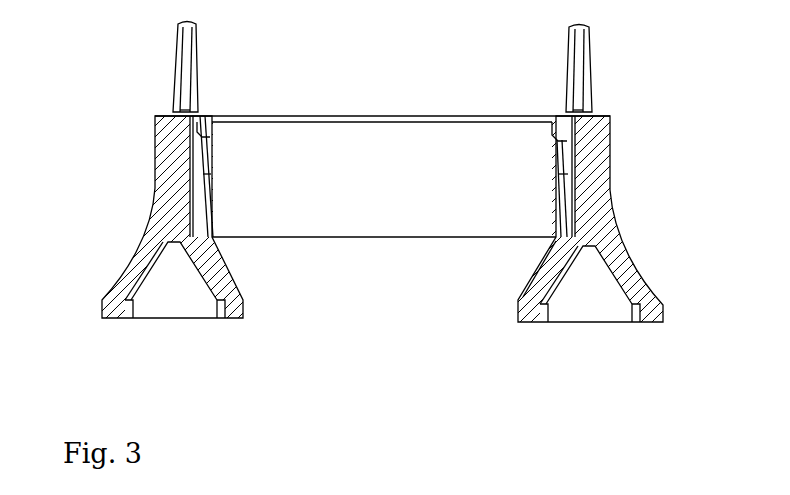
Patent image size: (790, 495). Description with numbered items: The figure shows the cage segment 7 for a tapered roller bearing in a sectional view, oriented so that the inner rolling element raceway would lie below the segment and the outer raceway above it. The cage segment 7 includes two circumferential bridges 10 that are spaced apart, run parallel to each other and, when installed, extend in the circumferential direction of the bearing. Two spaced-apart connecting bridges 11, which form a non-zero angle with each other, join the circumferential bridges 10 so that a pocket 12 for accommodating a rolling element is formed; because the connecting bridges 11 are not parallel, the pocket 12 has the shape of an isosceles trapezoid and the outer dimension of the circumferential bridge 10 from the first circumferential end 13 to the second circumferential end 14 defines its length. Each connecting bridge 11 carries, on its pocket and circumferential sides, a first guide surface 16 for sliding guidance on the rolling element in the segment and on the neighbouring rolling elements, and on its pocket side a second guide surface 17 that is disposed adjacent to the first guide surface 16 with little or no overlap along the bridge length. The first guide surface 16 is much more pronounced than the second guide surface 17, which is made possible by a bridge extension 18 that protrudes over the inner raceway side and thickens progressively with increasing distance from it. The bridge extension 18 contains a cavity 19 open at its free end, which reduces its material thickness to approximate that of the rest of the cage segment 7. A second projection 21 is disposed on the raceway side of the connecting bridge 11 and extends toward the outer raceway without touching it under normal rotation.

The cage segment 7 is at (88, 331).
The circumferential bridge 10 is at (400, 114).
The connecting bridge 11 is at (151, 148).
The pocket 12 is at (387, 205).
The first circumferential end 13 is at (149, 187).
The second circumferential end 14 is at (613, 178).
The first guide surface 16 is at (131, 255).
The second guide surface 17 is at (204, 143).
The bridge extension 18 is at (230, 319).
The cavity 19 is at (177, 304).
The second projection 21 is at (170, 68).